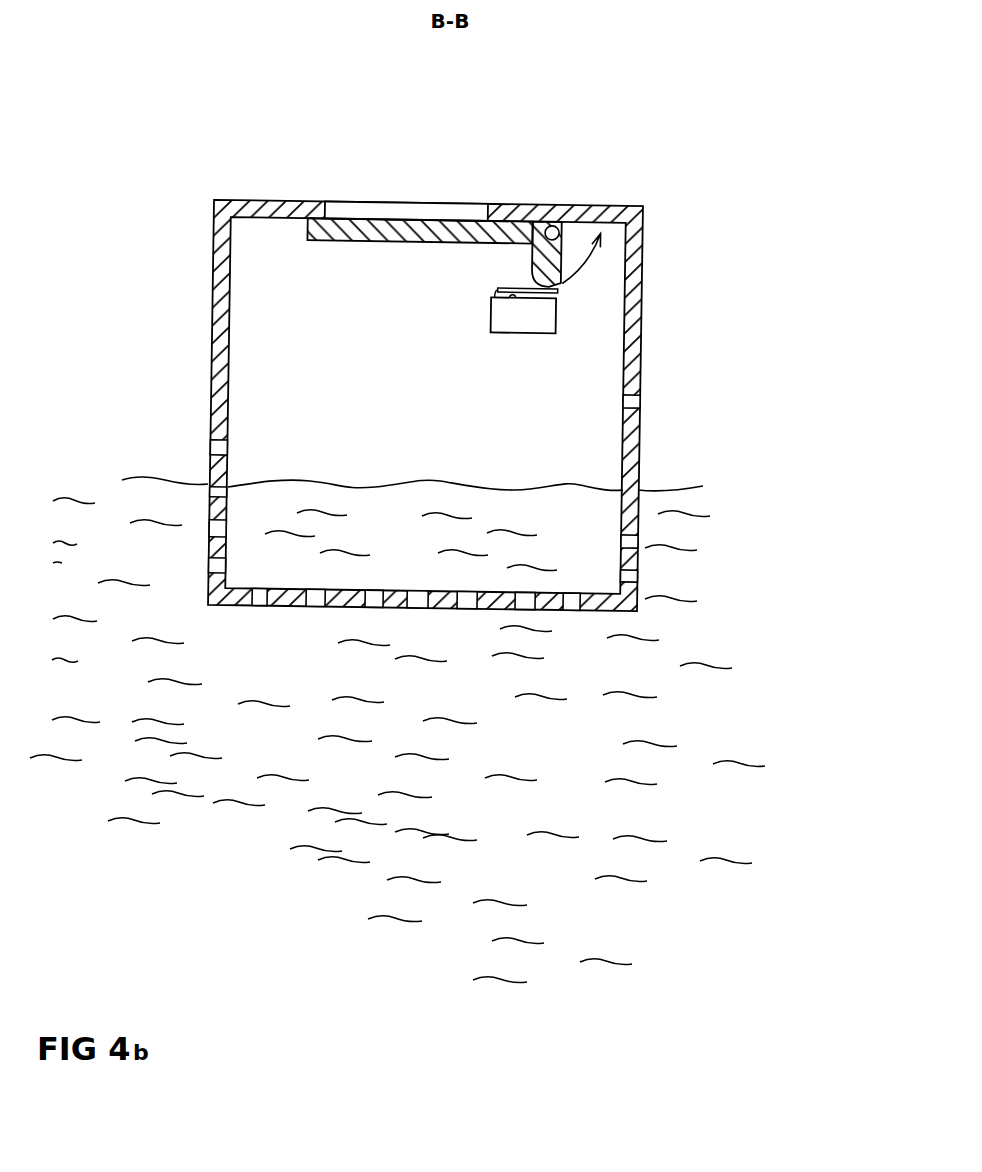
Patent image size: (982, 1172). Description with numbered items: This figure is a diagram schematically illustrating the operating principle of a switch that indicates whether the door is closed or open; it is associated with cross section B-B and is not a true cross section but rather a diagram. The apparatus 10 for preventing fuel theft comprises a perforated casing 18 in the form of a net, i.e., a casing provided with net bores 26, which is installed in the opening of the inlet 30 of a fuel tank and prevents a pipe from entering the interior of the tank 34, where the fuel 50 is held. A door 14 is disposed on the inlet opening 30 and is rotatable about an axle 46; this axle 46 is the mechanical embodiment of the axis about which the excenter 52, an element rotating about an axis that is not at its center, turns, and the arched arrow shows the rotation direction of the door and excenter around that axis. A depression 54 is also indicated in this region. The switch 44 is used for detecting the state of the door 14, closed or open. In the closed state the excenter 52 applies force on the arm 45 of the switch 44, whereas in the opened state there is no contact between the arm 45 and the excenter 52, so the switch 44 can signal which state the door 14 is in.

The apparatus 10 is at (718, 135).
The door 14 is at (358, 241).
The perforated casing 18 is at (632, 300).
The net bores 26 is at (218, 568).
The opening of the inlet 30 is at (421, 199).
The interior of the tank 34 is at (412, 446).
The switch 44 is at (518, 323).
The arm of switch 45 is at (558, 291).
The axle 46 is at (560, 225).
The fuel 50 is at (373, 543).
The excenter 52 is at (542, 268).
The depression 54 is at (605, 277).